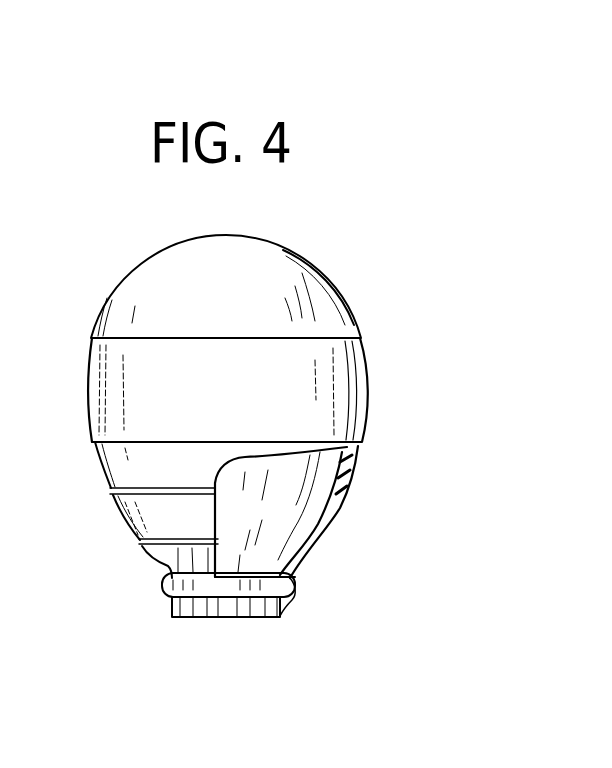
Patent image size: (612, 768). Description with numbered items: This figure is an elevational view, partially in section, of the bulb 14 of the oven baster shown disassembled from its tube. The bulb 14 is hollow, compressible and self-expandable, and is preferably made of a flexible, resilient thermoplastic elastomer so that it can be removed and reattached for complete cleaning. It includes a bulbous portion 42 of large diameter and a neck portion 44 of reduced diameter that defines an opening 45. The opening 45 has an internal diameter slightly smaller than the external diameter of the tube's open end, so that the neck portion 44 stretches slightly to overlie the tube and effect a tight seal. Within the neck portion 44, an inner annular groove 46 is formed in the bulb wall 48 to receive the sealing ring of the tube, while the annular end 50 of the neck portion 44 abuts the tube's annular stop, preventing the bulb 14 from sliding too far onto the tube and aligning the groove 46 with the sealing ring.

The bulb 14 is at (417, 288).
The bulbous portion 42 is at (88, 381).
The neck portion 44 is at (166, 566).
The opening 45 is at (230, 605).
The inner annular groove 46 is at (277, 583).
The bulb wall 48 is at (338, 504).
The annular end 50 is at (280, 610).